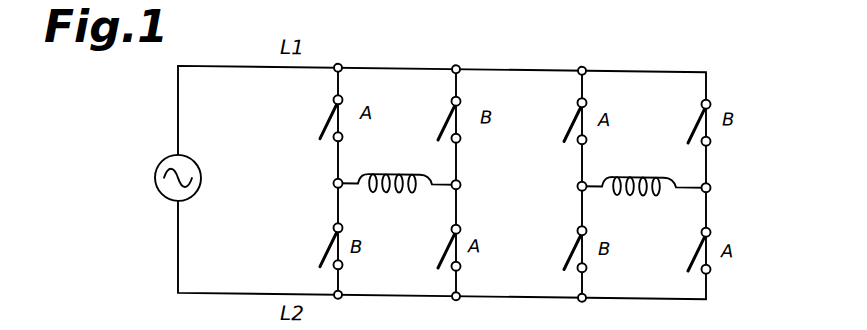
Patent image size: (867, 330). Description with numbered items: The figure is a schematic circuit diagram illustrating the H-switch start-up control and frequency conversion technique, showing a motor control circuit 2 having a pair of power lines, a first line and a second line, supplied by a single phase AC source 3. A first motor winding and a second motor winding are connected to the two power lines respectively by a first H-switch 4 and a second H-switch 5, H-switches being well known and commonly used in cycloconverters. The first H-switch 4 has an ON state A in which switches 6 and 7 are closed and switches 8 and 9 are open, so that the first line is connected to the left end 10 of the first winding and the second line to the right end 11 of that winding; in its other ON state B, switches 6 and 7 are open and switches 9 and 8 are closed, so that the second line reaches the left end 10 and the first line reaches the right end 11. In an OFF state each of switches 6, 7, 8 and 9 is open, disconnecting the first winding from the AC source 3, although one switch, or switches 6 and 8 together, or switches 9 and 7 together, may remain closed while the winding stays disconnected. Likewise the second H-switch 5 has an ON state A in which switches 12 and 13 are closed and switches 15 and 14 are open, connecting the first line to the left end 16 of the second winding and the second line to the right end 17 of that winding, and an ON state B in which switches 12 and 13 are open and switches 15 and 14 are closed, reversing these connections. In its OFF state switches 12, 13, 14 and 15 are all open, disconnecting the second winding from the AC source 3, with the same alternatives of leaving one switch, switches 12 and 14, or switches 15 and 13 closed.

The motor control circuit 2 is at (117, 111).
The single phase AC source 3 is at (155, 193).
The first H-switch 4 is at (470, 162).
The second H-switch 5 is at (728, 163).
The switch 6 is at (330, 108).
The switch 7 is at (449, 236).
The switch 8 is at (444, 119).
The switch 9 is at (329, 236).
The left end of W1 10 is at (334, 186).
The right end of W1 11 is at (461, 185).
The switch 12 is at (572, 118).
The switch 13 is at (697, 243).
The switch 14 is at (693, 120).
The switch 15 is at (572, 244).
The left end of W2 16 is at (578, 187).
The right end of W2 17 is at (711, 185).